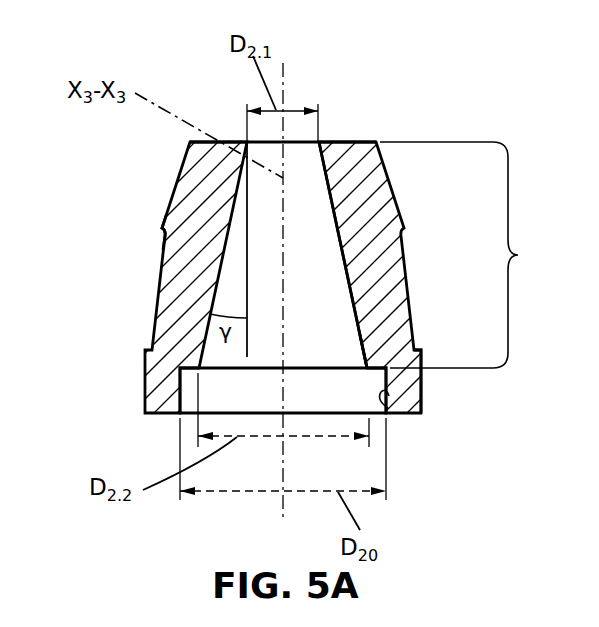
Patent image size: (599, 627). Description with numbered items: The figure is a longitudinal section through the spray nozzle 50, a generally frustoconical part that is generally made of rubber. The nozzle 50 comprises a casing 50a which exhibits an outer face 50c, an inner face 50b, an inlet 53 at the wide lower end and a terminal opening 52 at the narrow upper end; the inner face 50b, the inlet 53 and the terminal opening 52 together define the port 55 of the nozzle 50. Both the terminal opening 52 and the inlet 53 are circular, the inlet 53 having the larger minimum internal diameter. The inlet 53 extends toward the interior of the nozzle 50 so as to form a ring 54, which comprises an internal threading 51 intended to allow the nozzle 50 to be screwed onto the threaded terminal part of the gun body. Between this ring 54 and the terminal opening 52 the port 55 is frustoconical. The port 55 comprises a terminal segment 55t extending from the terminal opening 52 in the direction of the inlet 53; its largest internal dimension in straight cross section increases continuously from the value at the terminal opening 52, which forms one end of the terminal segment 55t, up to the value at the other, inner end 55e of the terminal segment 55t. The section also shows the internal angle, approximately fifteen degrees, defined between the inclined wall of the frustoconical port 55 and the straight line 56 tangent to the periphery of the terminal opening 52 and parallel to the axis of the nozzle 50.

The spray nozzle 50 is at (133, 285).
The casing 50a is at (198, 302).
The inner face 50b is at (340, 258).
The outer face 50c is at (167, 255).
The internal threading 51 is at (388, 412).
The terminal opening 52 is at (303, 142).
The inlet 53 is at (265, 413).
The ring 54 is at (423, 395).
The port 55 is at (308, 208).
The inner end of the terminal segment 55e is at (335, 367).
The terminal segment 55t is at (468, 255).
The straight line 56 is at (247, 220).